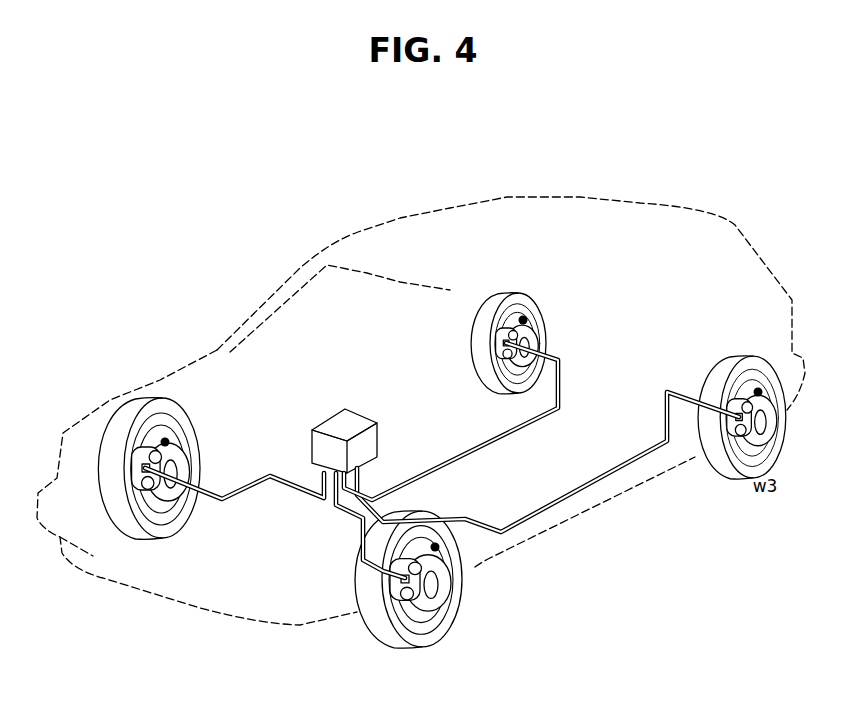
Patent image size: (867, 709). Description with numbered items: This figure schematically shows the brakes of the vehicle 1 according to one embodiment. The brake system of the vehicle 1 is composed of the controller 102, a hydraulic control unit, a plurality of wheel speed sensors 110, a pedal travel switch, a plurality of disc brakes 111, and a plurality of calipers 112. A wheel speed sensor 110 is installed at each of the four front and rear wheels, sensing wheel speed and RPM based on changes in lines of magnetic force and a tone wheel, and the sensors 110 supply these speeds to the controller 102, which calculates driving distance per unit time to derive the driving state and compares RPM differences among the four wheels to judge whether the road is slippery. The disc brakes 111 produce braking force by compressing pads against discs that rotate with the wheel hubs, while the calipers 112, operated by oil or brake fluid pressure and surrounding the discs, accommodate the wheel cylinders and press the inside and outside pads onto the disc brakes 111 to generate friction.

The vehicle 1 is at (254, 209).
The controller 102 is at (352, 420).
The wheel speed sensors 110 is at (533, 314).
The disc brakes 111 is at (178, 455).
The calipers 112 is at (428, 600).